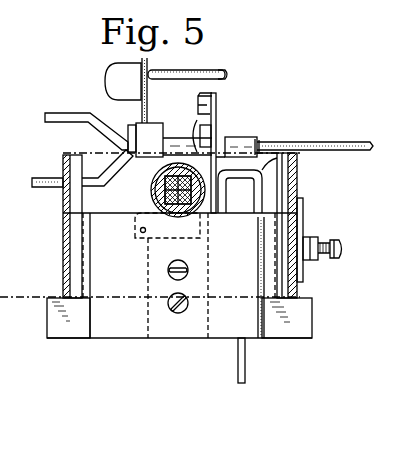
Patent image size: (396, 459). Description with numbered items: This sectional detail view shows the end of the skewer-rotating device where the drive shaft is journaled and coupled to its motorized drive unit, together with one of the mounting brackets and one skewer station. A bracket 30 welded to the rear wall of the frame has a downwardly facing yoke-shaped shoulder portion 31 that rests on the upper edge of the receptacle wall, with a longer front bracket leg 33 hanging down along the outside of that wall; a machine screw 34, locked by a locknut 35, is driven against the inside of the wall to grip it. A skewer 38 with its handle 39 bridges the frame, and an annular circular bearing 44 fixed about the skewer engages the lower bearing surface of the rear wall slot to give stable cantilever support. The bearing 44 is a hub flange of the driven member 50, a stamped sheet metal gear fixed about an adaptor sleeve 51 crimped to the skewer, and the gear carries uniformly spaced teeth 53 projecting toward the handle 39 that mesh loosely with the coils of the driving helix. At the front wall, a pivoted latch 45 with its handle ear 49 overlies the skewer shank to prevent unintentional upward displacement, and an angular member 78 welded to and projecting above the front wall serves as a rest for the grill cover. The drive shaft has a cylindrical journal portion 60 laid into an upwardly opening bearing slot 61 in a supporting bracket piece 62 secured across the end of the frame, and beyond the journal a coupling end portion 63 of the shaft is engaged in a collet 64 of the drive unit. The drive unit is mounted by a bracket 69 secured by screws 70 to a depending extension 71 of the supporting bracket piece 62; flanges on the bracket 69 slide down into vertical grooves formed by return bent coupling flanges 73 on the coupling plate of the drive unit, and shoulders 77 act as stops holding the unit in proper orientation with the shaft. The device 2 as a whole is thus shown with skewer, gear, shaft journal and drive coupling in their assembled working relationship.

The device assembly 2 is at (198, 225).
The bracket 30 is at (303, 205).
The yoke-shaped shoulder portion 31 is at (238, 175).
The front bracket leg 33 is at (246, 368).
The machine screw 34 is at (341, 249).
The locknut 35 is at (312, 262).
The skewer 38 is at (333, 142).
The handle 39 is at (52, 113).
The annular circular bearing 44 is at (238, 140).
The pivoted latch 45 is at (158, 75).
The handle ear 49 is at (110, 78).
The driven member 50 is at (216, 125).
The adaptor sleeve 51 is at (258, 148).
The teeth 53 is at (210, 100).
The cylindrical journal portion 60 is at (170, 226).
The bearing slot 61 is at (170, 130).
The supporting bracket piece 62 is at (138, 130).
The coupling end portion 63 is at (150, 190).
The collet 64 is at (190, 208).
The bracket 69 is at (125, 330).
The screws 70 is at (190, 305).
The depending extension 71 is at (212, 327).
The return bent coupling flanges 73 is at (63, 200).
The shoulders 77 is at (50, 298).
The angular member 78 is at (228, 70).